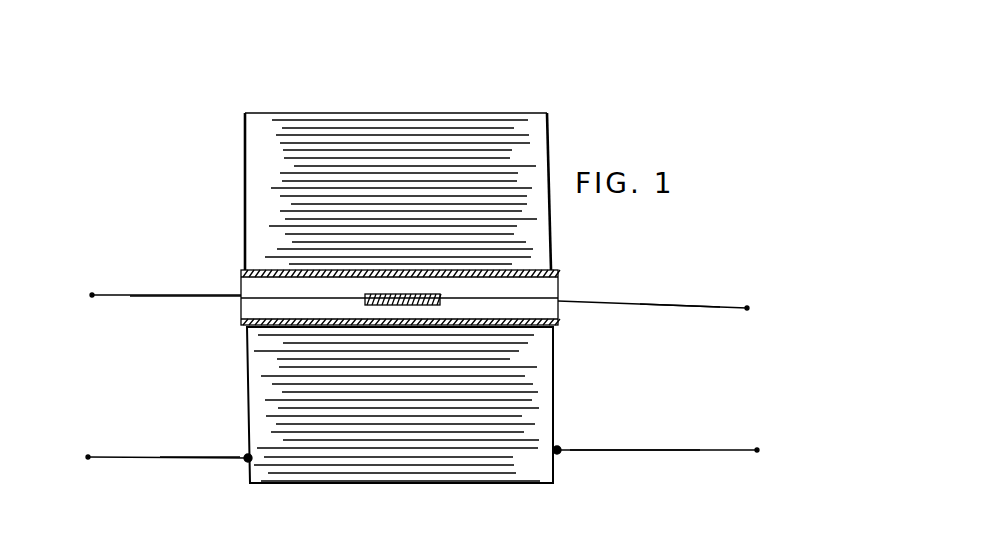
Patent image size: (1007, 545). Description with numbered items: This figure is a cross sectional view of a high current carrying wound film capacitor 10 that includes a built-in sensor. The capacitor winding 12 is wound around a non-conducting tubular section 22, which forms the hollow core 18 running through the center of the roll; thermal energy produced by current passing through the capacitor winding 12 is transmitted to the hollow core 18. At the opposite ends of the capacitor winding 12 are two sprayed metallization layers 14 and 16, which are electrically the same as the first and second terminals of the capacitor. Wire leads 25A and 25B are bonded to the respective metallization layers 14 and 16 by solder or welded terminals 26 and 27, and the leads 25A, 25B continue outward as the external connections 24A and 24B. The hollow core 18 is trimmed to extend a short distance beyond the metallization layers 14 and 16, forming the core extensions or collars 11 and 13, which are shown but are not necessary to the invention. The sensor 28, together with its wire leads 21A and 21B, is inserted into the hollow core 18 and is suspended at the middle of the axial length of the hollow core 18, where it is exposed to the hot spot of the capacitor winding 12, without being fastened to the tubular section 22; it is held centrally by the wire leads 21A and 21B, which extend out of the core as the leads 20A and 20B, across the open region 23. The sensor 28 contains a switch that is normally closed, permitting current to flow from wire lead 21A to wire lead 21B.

The capacitor 10 is at (155, 128).
The core extension 11 is at (240, 308).
The capacitor winding 12 is at (300, 133).
The core extension 13 is at (560, 312).
The metallization layer 14 is at (247, 143).
The metallization layer 16 is at (550, 140).
The hollow core 18 is at (560, 290).
The left lead wire 20A is at (85, 285).
The right lead wire 20B is at (755, 312).
The wire lead 21A is at (148, 297).
The wire lead 21B is at (686, 303).
The tubular section 22 is at (240, 273).
The gap region 23 is at (702, 372).
The left lower lead wire 24A is at (87, 448).
The right lower lead wire 24B is at (767, 440).
The wire lead 25A is at (177, 457).
The wire lead 25B is at (620, 448).
The terminal 26 is at (240, 467).
The terminal 27 is at (560, 455).
The sensor 28 is at (368, 297).